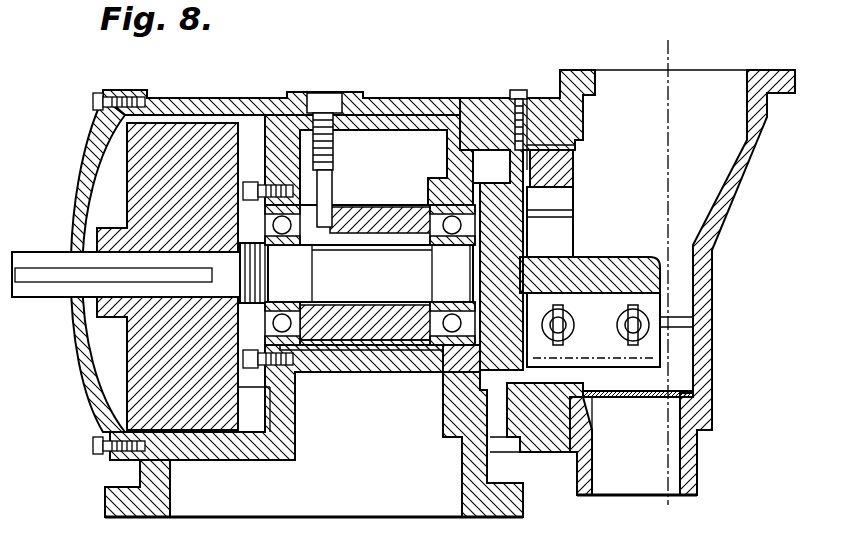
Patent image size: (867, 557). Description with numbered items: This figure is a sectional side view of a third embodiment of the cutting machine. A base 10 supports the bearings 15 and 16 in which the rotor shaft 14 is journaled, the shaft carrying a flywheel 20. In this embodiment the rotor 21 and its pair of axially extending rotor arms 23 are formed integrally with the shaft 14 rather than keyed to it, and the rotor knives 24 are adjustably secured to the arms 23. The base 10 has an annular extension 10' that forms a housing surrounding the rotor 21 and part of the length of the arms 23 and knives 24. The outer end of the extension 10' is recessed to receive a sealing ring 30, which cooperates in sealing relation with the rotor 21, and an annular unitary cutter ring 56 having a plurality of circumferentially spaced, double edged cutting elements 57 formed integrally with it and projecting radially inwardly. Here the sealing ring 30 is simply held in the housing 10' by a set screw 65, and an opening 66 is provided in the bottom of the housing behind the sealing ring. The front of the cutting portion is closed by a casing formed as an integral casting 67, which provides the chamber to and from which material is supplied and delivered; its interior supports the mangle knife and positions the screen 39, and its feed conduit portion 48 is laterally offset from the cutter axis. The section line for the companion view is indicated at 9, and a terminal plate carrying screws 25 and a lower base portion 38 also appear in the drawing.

The base 10 is at (297, 303).
The annular extension 10' is at (527, 277).
The rotor shaft 14 is at (40, 258).
The bearing 15 is at (280, 203).
The bearing 16 is at (440, 203).
The flywheel 20 is at (200, 132).
The rotor 21 is at (493, 358).
The rotor arms 23 is at (590, 273).
The rotor knives 24 is at (650, 357).
The screws 25 is at (574, 324).
The sealing ring 30 is at (543, 120).
The base 38 is at (620, 487).
The screen 39 is at (655, 395).
The feed conduit portion 48 is at (750, 130).
The cutter ring 56 is at (572, 174).
The cutting elements 57 is at (558, 217).
The set screw 65 is at (518, 90).
The opening 66 is at (503, 433).
The casting 67 is at (698, 318).
The section line 9 is at (668, 45).